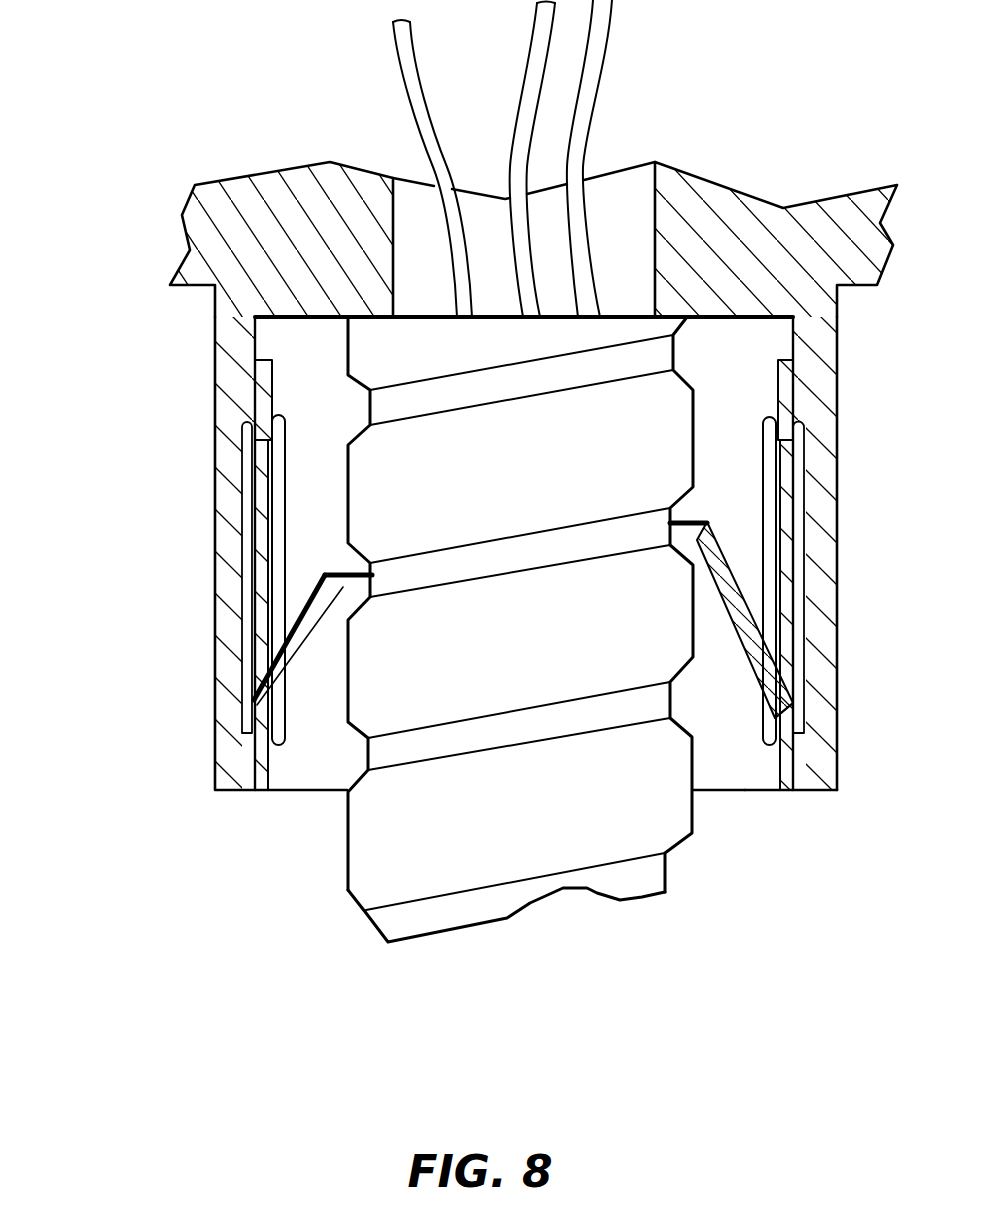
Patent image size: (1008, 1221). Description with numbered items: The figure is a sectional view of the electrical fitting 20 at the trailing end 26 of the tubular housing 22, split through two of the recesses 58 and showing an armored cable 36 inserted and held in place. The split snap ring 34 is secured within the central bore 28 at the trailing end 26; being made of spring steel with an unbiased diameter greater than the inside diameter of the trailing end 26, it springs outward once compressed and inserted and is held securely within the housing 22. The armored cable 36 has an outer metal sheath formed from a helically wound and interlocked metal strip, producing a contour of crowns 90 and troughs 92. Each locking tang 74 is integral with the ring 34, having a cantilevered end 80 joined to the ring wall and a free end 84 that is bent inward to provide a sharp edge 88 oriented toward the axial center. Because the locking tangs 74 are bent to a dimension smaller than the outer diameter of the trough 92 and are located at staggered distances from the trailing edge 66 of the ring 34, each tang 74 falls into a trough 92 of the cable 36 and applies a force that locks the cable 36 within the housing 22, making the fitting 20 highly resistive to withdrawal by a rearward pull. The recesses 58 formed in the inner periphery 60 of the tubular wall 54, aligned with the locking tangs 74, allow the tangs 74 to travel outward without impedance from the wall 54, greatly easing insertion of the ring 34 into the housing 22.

The electrical fitting 20 is at (168, 405).
The tubular housing 22 is at (703, 185).
The trailing end 26 is at (803, 793).
The central bore 28 is at (298, 773).
The split snap ring 34 is at (786, 370).
The armored cable 36 is at (363, 867).
The tubular wall 54 is at (817, 340).
The recesses 58 is at (249, 510).
The inner periphery 60 is at (256, 348).
The trailing edge 66 is at (718, 792).
The locking tang 74 is at (303, 602).
The cantilevered end 80 is at (255, 703).
The free end 84 is at (347, 572).
The sharp edge 88 is at (670, 523).
The crowns 90 is at (570, 461).
The troughs 92 is at (670, 698).